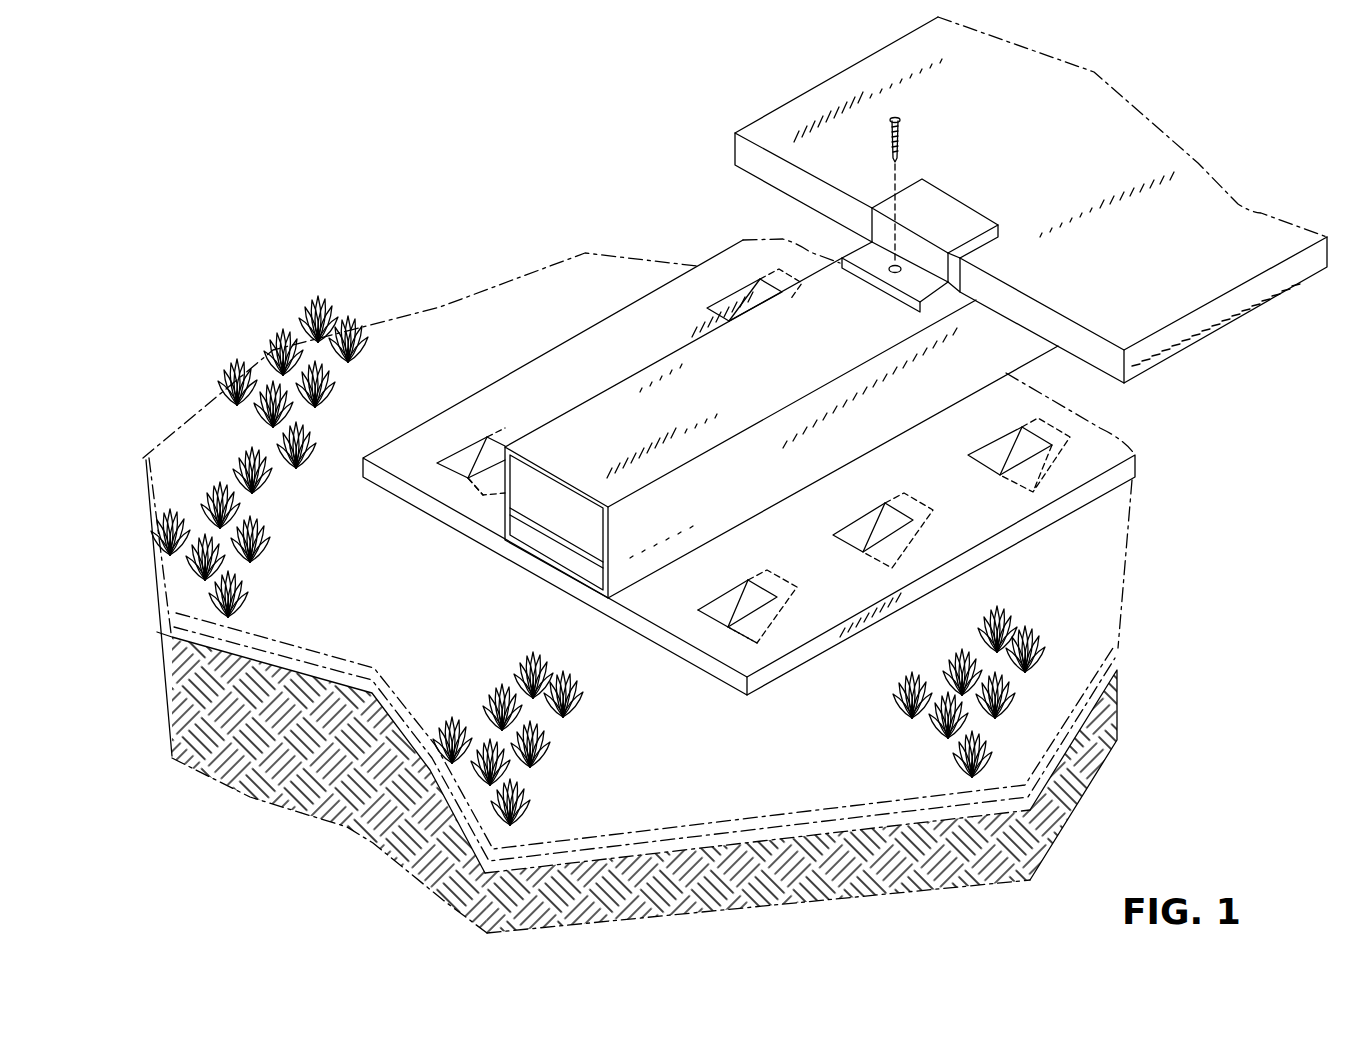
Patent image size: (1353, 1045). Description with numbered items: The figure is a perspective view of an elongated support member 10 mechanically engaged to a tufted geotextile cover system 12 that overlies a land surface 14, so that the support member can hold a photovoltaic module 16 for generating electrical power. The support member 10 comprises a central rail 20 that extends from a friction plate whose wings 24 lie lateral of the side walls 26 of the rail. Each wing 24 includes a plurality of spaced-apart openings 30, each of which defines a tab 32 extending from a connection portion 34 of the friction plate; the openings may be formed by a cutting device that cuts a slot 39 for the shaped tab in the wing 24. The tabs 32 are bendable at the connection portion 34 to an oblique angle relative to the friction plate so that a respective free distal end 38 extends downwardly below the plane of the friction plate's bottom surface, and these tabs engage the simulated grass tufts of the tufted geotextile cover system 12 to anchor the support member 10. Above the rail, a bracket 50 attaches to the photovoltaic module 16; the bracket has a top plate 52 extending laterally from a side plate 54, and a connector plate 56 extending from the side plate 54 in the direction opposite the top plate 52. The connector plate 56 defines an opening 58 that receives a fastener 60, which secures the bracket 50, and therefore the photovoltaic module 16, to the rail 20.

The elongated support member 10 is at (570, 335).
The tufted geotextile cover system 12 is at (278, 385).
The land surface 14 is at (318, 759).
The photovoltaic module 16 is at (1001, 101).
The central rail 20 is at (784, 374).
The wings 24 is at (553, 411).
The side walls 26 is at (525, 487).
The openings 30 is at (727, 597).
The tabs 32 is at (753, 605).
The connection portion 34 is at (775, 578).
The free distal end 38 is at (757, 643).
The slot 39 is at (713, 601).
The bracket 50 is at (987, 253).
The top plate 52 is at (957, 210).
The side plate 54 is at (930, 263).
The connector plate 56 is at (917, 283).
The opening 58 is at (888, 272).
The fastener 60 is at (885, 122).